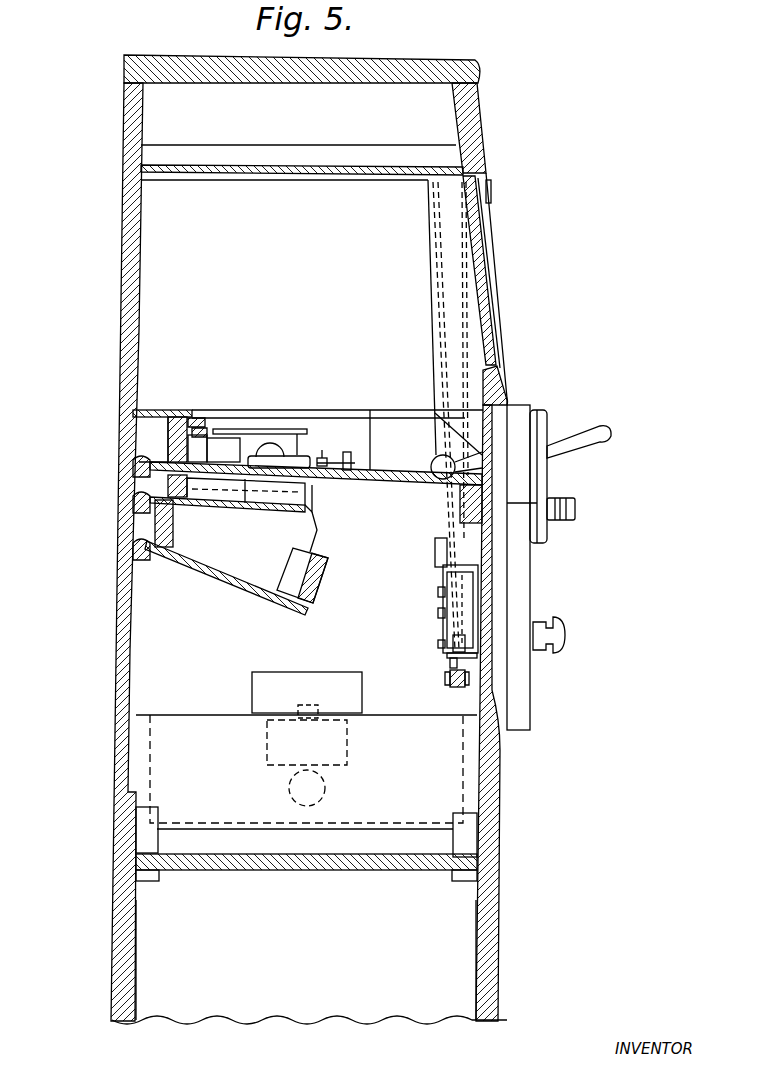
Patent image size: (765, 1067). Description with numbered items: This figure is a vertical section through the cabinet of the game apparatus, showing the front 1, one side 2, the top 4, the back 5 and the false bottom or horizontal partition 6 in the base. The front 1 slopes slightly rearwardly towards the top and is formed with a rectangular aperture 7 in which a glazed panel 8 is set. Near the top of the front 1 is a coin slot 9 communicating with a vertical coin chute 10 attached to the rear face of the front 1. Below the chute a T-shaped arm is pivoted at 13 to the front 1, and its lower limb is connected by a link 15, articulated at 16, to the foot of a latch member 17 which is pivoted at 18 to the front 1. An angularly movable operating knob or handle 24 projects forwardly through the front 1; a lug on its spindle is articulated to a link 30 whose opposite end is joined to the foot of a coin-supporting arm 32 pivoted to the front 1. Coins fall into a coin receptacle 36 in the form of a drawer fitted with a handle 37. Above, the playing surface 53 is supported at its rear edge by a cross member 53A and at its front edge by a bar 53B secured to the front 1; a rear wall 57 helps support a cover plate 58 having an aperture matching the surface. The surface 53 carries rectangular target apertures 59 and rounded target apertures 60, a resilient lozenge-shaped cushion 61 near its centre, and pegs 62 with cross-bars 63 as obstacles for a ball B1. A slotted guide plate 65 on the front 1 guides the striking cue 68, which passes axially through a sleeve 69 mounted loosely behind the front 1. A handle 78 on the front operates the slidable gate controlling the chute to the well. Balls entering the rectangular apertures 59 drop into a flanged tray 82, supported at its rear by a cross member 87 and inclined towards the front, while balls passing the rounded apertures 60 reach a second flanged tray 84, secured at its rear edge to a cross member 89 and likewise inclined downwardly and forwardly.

The front 1 is at (494, 797).
The side 2 is at (312, 985).
The top 4 is at (181, 62).
The back 5 is at (125, 345).
The false bottom or horizontal partition 6 is at (313, 866).
The rectangular aperture 7 is at (485, 238).
The glazed panel 8 is at (489, 288).
The coin slot 9 is at (492, 190).
The coin chute 10 is at (448, 235).
The pivot 13 is at (438, 592).
The link 15 is at (453, 650).
The articulation 16 is at (438, 644).
The latch member 17 is at (435, 569).
The pivot 18 is at (438, 612).
The operating knob or handle 24 is at (566, 633).
The link 30 is at (458, 687).
The coin-supporting arm 32 is at (450, 665).
The coin receptacle 36 is at (192, 752).
The handle 37 is at (289, 788).
The playing surface 53 is at (349, 478).
The cross member 53A is at (132, 467).
The bar 53B is at (460, 513).
The rear wall 57 is at (168, 428).
The cover plate 58 is at (163, 410).
The target apertures 59 is at (228, 450).
The target apertures 60 is at (268, 450).
The deflector or cushion 61 is at (297, 455).
The pegs 62 is at (319, 457).
The cross-bars 63 is at (348, 452).
The slotted guide plate 65 is at (548, 432).
The striking device or cue 68 is at (583, 448).
The sleeve 69 is at (463, 467).
The handle 78 is at (574, 517).
The flanged tray 82 is at (222, 506).
The second flanged tray 84 is at (229, 582).
The cross member 87 is at (132, 506).
The cross member 89 is at (132, 552).
The ball B1 is at (431, 467).